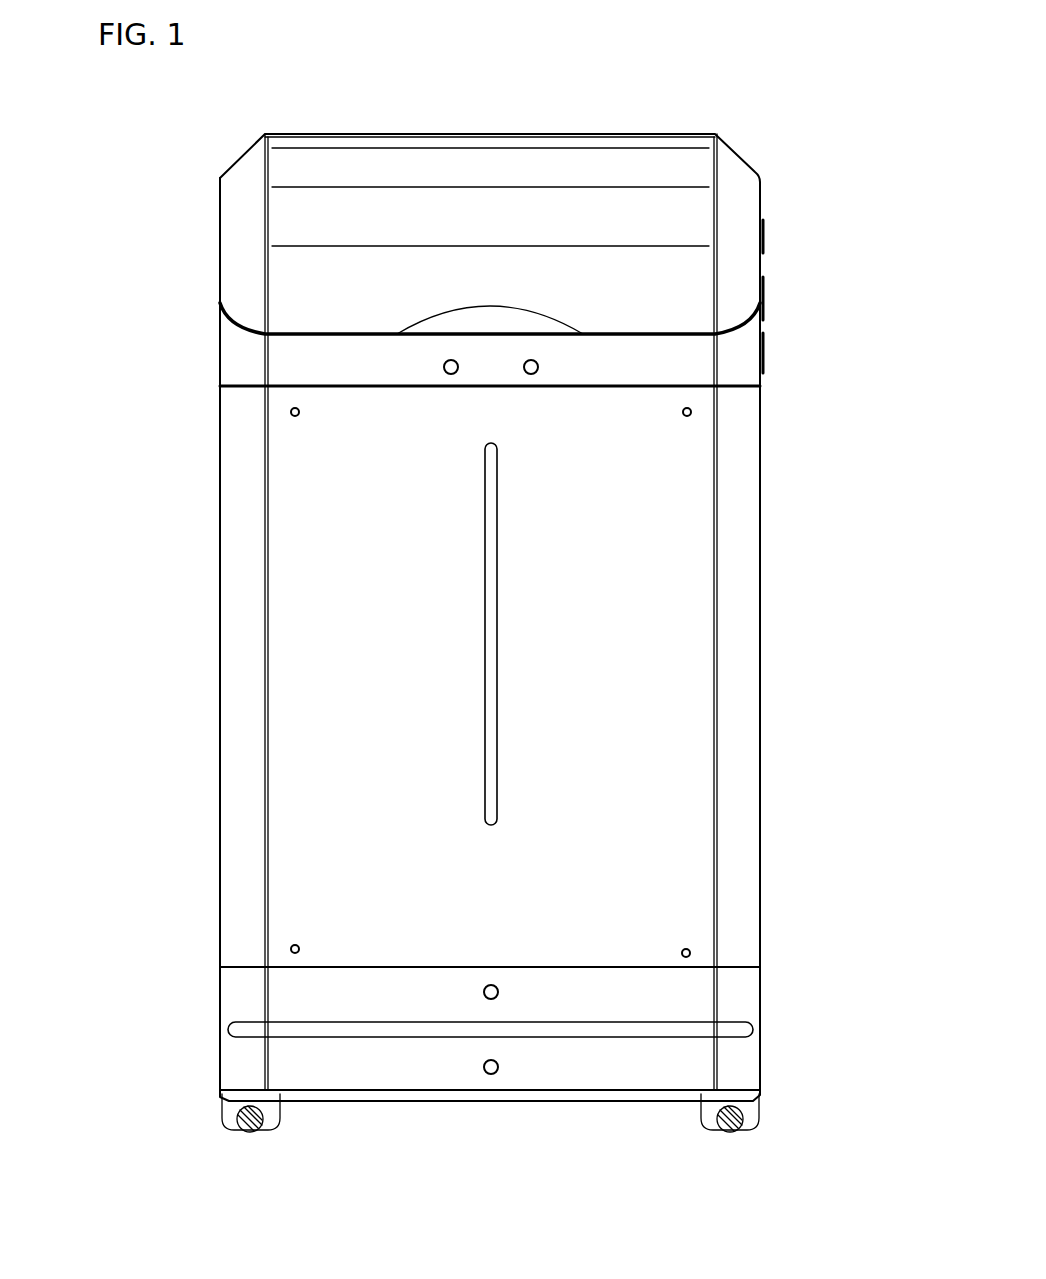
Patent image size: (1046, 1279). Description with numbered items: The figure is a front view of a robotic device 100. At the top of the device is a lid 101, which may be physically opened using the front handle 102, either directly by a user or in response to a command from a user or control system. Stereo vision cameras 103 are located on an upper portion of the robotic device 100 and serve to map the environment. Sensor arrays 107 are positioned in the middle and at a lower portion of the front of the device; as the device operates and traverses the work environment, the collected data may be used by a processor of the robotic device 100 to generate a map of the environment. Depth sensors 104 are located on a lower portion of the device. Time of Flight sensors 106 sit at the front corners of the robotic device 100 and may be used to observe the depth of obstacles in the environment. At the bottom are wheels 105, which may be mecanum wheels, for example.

The robotic device 100 is at (453, 617).
The lid 101 is at (405, 267).
The front handle 102 is at (457, 315).
The stereo vision cameras 103 is at (457, 356).
The depth sensors 104 is at (483, 1063).
The wheels 105 is at (209, 1101).
The Time of Flight (TOF) sensors 106 is at (293, 417).
The sensor arrays 107 is at (502, 637).